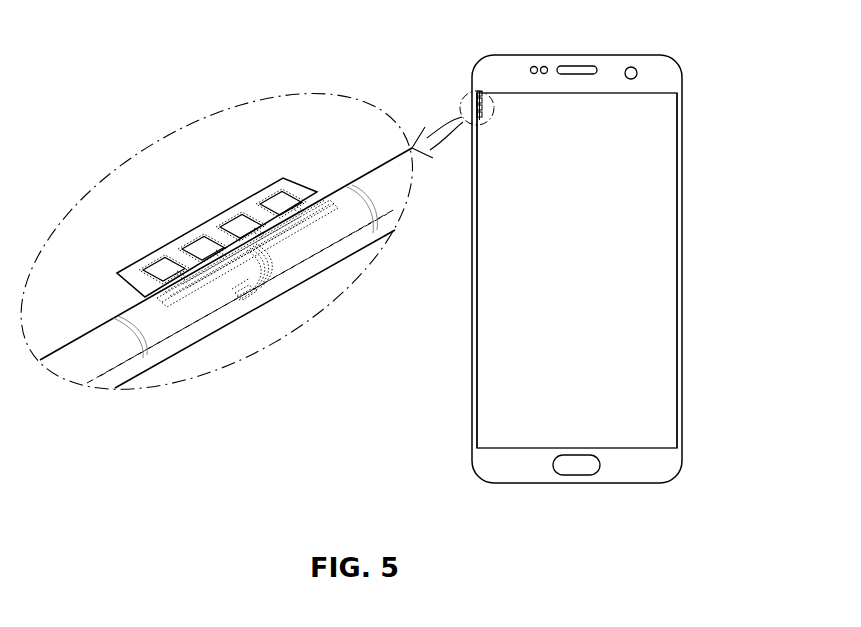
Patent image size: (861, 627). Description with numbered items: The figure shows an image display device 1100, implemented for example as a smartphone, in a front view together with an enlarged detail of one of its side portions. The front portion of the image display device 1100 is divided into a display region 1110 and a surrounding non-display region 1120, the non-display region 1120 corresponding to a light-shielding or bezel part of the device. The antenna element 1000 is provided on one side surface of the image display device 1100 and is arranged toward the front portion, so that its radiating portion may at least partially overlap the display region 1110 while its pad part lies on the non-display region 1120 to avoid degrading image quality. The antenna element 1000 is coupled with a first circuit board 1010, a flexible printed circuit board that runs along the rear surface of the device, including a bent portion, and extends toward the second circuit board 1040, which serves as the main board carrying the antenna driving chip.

The image display device 1100 is at (442, 66).
The display region 1110 is at (666, 326).
The non-display region 1120 is at (628, 473).
The antenna element 1000 is at (178, 309).
The second circuit board 1040 is at (214, 309).
The first circuit board 1010 is at (259, 300).